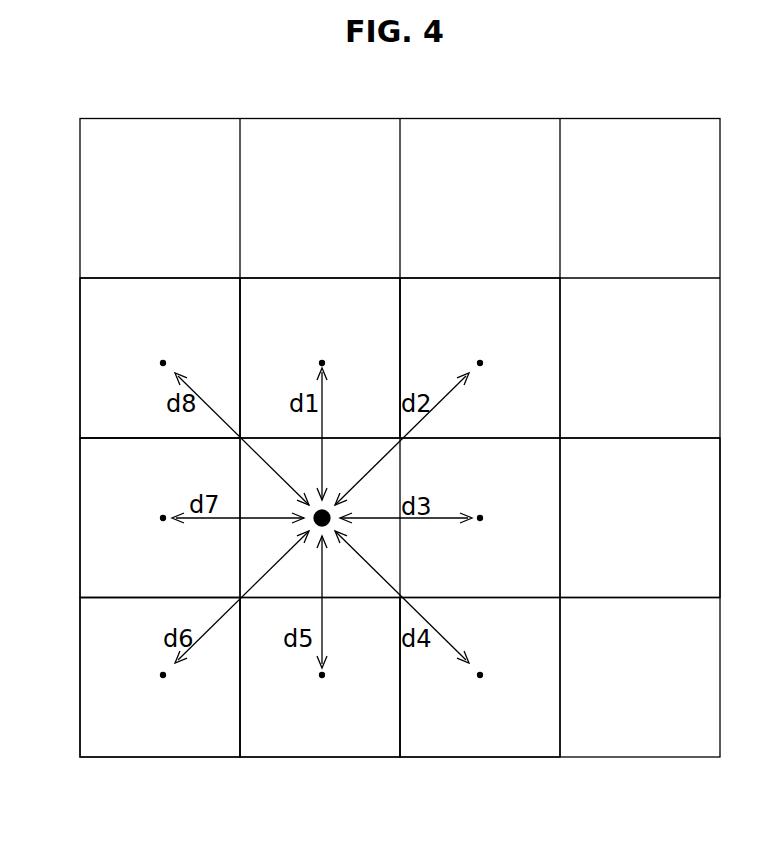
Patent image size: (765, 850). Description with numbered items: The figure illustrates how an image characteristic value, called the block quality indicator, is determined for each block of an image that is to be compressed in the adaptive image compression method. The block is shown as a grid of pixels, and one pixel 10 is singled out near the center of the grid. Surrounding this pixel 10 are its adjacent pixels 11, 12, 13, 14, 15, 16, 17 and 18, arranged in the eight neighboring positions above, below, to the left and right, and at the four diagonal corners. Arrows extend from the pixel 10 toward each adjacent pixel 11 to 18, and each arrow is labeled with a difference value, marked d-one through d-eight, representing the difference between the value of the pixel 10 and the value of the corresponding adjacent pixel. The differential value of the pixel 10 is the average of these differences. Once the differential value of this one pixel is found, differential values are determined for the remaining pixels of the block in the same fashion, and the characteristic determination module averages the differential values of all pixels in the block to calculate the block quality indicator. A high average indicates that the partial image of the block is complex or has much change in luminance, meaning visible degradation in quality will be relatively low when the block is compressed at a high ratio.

The pixel 10 is at (303, 507).
The adjacent pixel 11 is at (316, 306).
The adjacent pixel 12 is at (467, 306).
The adjacent pixel 13 is at (533, 522).
The adjacent pixel 14 is at (467, 728).
The adjacent pixel 15 is at (317, 728).
The adjacent pixel 16 is at (158, 728).
The adjacent pixel 17 is at (113, 528).
The upper-left neighboring pixel 18 is at (157, 303).